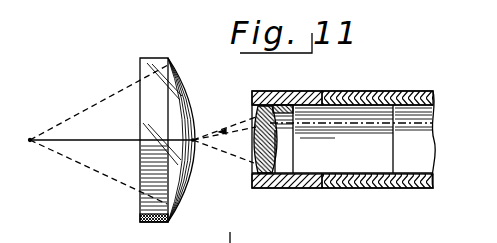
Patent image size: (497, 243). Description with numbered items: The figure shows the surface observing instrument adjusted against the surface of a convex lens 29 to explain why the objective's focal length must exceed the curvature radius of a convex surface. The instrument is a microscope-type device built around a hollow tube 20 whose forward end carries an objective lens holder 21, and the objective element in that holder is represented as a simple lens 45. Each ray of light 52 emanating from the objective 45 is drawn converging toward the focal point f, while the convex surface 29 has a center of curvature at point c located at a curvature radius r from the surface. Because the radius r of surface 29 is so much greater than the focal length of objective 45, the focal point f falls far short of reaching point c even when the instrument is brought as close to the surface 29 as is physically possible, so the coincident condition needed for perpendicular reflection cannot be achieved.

The hollow tube 20 is at (389, 92).
The objective lens holder 21 is at (277, 92).
The convex lens 29 is at (185, 87).
The simple lens 45 is at (254, 163).
The ray of light 52 is at (380, 126).
The center of curvature point c is at (26, 152).
The curvature radius r is at (126, 150).
The focal point f is at (195, 138).